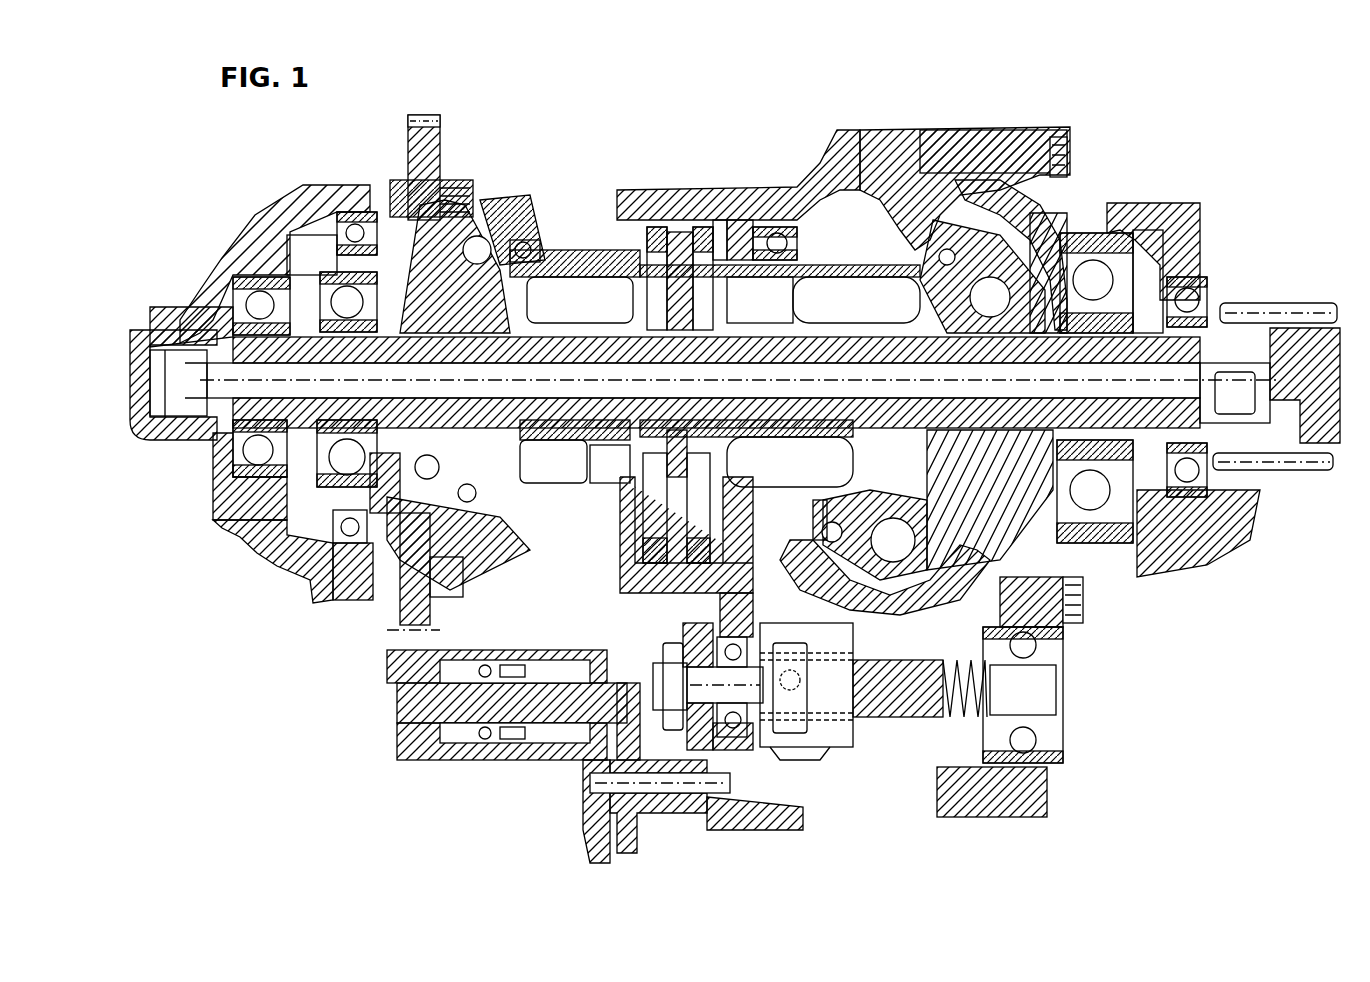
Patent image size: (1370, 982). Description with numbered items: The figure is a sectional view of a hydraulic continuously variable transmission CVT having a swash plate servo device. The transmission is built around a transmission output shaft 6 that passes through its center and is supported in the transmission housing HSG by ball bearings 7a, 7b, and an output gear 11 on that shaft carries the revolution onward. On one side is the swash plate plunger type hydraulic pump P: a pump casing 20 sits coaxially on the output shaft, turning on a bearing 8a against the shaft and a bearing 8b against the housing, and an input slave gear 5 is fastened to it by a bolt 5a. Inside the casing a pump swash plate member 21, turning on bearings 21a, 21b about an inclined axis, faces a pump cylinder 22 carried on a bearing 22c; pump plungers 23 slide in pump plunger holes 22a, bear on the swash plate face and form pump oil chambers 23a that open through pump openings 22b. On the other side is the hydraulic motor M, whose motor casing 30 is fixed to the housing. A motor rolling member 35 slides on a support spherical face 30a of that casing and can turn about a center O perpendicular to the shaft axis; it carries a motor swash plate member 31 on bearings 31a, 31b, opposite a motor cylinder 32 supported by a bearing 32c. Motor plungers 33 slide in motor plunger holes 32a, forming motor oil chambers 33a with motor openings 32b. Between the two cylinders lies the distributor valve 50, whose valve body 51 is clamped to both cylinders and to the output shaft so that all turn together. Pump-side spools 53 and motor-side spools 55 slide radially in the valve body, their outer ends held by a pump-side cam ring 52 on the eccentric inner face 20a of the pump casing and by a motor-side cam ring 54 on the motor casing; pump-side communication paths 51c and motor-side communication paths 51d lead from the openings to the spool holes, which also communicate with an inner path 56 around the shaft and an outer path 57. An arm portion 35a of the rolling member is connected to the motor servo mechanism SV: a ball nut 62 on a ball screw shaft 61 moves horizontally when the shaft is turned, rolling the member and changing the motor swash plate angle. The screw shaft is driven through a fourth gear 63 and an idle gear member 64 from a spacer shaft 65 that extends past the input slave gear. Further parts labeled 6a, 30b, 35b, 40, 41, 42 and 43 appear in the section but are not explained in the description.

The input slave gear 5 is at (404, 148).
The bolt 5a is at (385, 185).
The transmission output shaft 6 is at (960, 345).
The shaft bore 6a is at (437, 393).
The ball bearing 7a is at (217, 463).
The ball bearing 7b is at (1213, 477).
The bearing 8a is at (250, 537).
The bearing 8b is at (317, 597).
The transmission output gear 11 is at (1295, 307).
The pump casing 20 is at (545, 565).
The eccentric inner face 20a is at (640, 580).
The pump swash plate member 21 is at (487, 297).
The bearing 21a is at (473, 203).
The bearing 21b is at (533, 220).
The pump cylinder 22 is at (540, 555).
The pump plunger hole 22a is at (570, 210).
The pump opening 22b is at (535, 362).
The bearing 22c is at (570, 580).
The pump plunger 23 is at (597, 310).
The pump oil chamber 23a is at (610, 464).
The motor casing 30 is at (983, 133).
The support spherical face 30a is at (693, 580).
The motor housing 30b is at (985, 215).
The motor swash plate member 31 is at (870, 500).
The bearing 31a is at (1035, 196).
The bearing 31b is at (933, 250).
The motor cylinder 32 is at (820, 240).
The motor plunger hole 32a is at (837, 265).
The motor opening 32b is at (775, 340).
The bearing 32c is at (803, 230).
The motor plunger 33 is at (897, 310).
The motor oil chamber 33a is at (783, 313).
The motor rolling member 35 is at (945, 580).
The arm portion 35a is at (860, 720).
The lever pin 35b is at (1029, 393).
The bearing 40 is at (1140, 292).
The coupling 41 is at (1090, 340).
The bearing 42 is at (1123, 233).
The bearing retainer 43 is at (1165, 195).
The distributor valve 50 is at (733, 195).
The valve body 51 is at (633, 190).
The pump-side communication path 51c is at (620, 345).
The motor-side communication path 51d is at (718, 345).
The pump-side cam ring 52 is at (657, 212).
The pump-side spool 53 is at (647, 533).
The motor-side cam ring 54 is at (713, 195).
The motor-side spool 55 is at (703, 533).
The inner path 56 is at (672, 340).
The outer path 57 is at (683, 230).
The ball screw shaft 61 is at (940, 715).
The ball nut 62 is at (820, 758).
The fourth gear 63 is at (667, 675).
The idle gear member 64 is at (655, 800).
The spacer shaft 65 is at (555, 750).
The transmission housing HSG is at (287, 184).
The hydraulic pump P is at (487, 117).
The hydraulic motor M is at (1083, 110).
The hydraulic continuously variable transmission CVT is at (1227, 97).
The motor servo mechanism SV is at (507, 797).
The center O is at (840, 375).